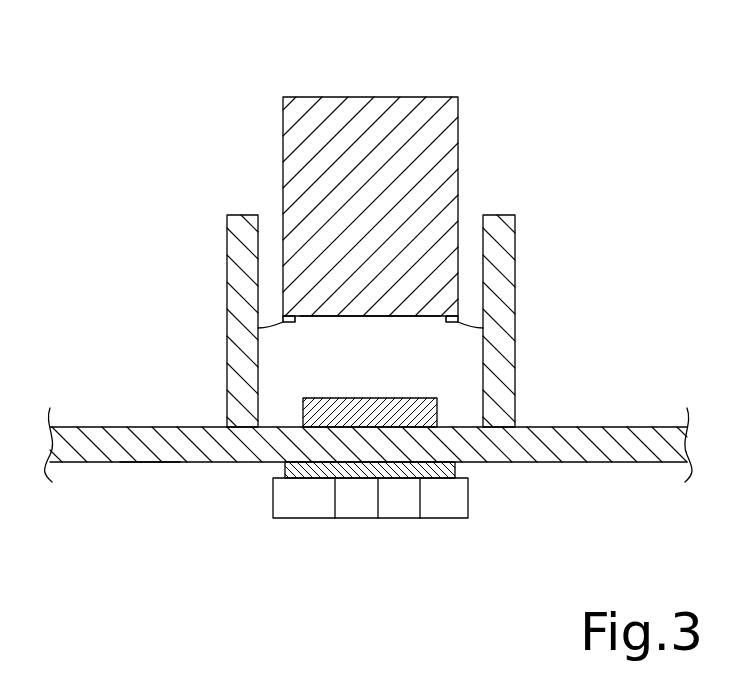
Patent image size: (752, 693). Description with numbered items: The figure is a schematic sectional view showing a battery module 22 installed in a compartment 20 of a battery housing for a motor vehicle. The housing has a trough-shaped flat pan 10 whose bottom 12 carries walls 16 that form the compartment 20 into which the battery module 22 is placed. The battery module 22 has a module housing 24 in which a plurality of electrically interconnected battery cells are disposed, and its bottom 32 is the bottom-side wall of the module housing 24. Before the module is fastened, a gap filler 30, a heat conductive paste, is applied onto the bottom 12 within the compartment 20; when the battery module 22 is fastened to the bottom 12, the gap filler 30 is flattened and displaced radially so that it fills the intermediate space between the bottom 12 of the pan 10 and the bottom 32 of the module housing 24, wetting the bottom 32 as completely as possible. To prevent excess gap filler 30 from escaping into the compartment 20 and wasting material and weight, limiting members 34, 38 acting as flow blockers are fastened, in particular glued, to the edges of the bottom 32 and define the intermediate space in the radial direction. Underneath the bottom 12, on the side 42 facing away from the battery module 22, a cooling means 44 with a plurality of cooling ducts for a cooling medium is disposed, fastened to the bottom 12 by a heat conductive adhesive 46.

The pan 10 is at (86, 292).
The bottom 12 is at (597, 445).
The walls 16 is at (236, 245).
The compartment 20 is at (383, 369).
The battery module 22 is at (422, 82).
The module housing 24 is at (470, 124).
The gap filler 30 is at (332, 415).
The bottom 32 is at (410, 317).
The limiting member 34 is at (483, 328).
The limiting member 38 is at (258, 328).
The side 42 is at (147, 465).
The cooling means 44 is at (400, 512).
The heat conductive adhesive 46 is at (322, 476).